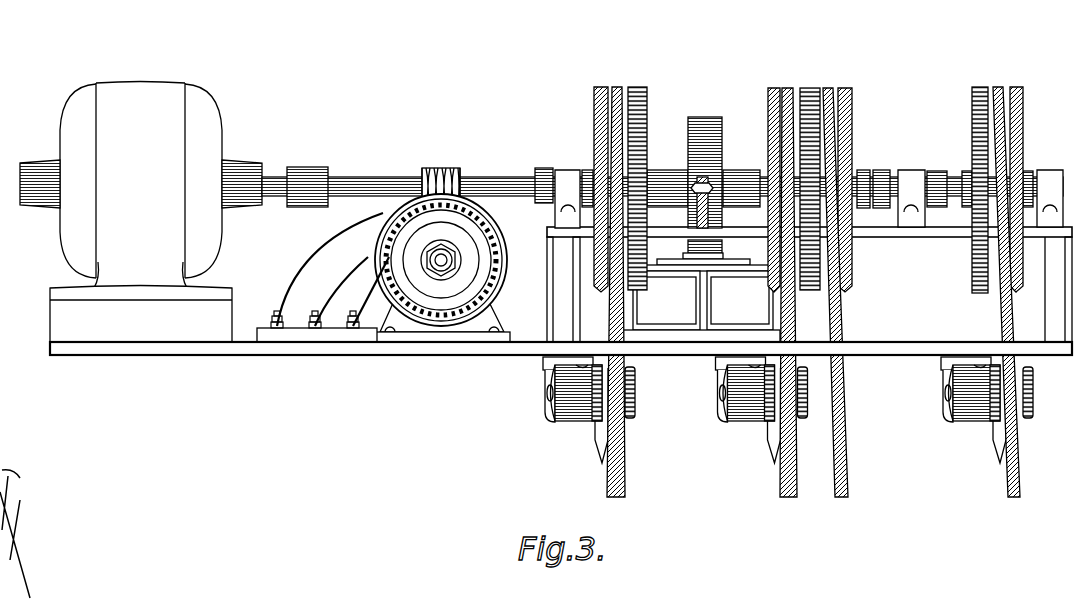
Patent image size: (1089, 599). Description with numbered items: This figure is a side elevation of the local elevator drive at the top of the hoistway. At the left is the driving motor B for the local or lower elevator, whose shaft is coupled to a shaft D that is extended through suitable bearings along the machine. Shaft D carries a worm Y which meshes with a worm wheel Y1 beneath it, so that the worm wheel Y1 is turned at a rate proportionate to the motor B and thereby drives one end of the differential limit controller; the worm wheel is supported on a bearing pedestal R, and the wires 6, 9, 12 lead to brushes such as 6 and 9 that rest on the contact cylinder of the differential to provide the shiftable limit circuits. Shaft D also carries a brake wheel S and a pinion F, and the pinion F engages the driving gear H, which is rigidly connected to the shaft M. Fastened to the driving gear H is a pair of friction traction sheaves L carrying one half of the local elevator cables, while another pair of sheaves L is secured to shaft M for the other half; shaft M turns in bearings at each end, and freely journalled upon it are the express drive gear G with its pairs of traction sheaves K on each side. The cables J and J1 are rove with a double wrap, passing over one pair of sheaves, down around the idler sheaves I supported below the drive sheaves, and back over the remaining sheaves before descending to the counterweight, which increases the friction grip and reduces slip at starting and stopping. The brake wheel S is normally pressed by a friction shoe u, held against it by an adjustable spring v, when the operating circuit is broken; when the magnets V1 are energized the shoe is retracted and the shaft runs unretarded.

The driving motor for the local elevator B is at (134, 86).
The worm Y is at (440, 168).
The shaft D is at (491, 176).
The worm wheel Y1 is at (483, 216).
The bearing pedestal R is at (503, 293).
The brush 6 is at (318, 290).
The brush 9 is at (346, 304).
The conductor wire 12 is at (372, 316).
The pulley L is at (601, 88).
The driving gear H is at (637, 88).
The pinion F is at (638, 190).
The brake wheel S is at (703, 116).
The friction drive traction sheaves K is at (775, 88).
The drive gear G is at (810, 100).
The shaft M is at (955, 186).
The adjustable spring v is at (712, 212).
The friction shoe u is at (688, 254).
The magnet V1 is at (700, 307).
The idler sheaves I is at (603, 440).
The cables J is at (626, 478).
The belt J1 is at (863, 481).